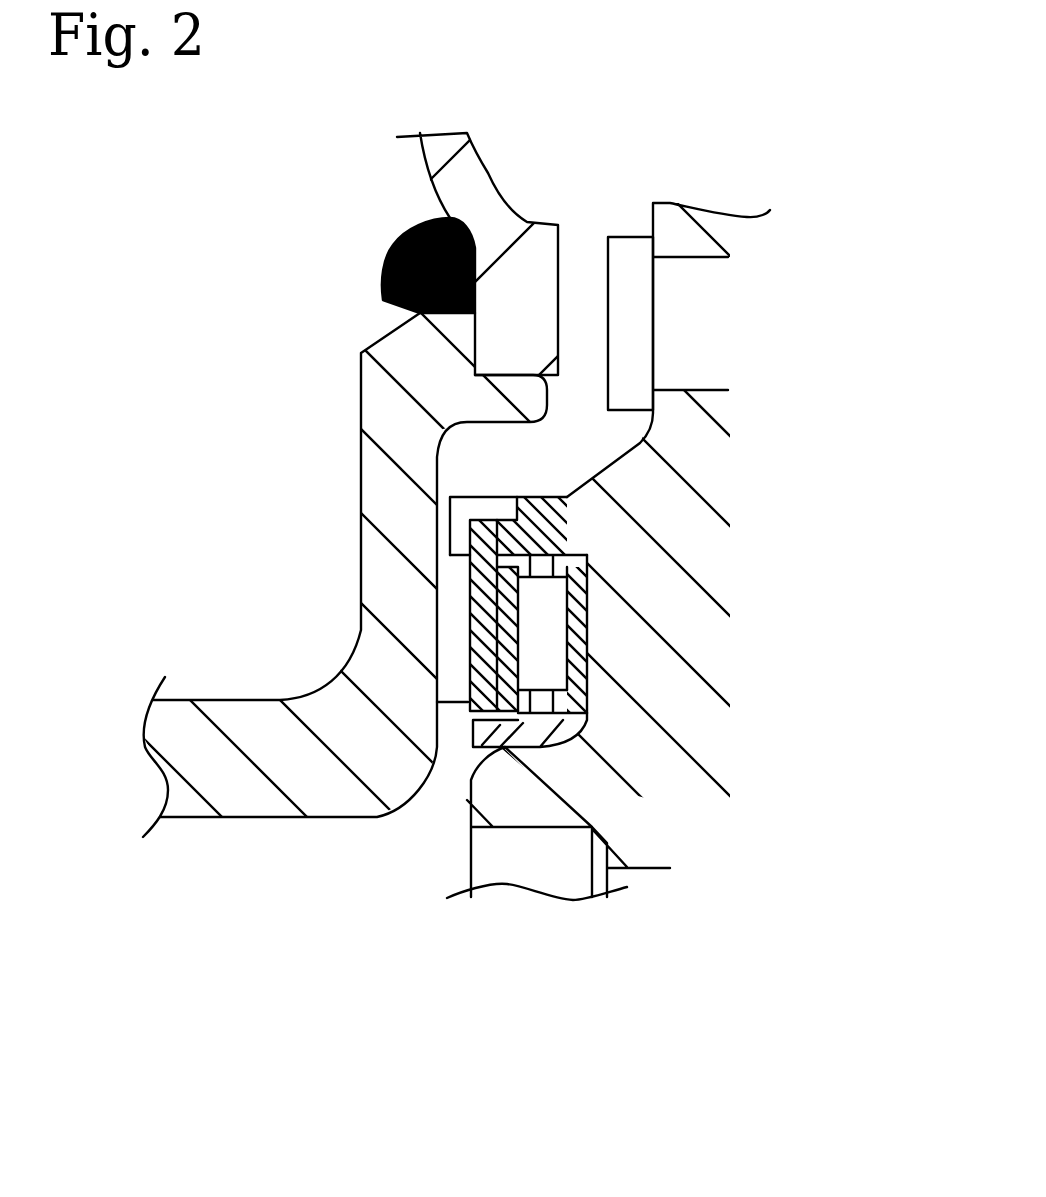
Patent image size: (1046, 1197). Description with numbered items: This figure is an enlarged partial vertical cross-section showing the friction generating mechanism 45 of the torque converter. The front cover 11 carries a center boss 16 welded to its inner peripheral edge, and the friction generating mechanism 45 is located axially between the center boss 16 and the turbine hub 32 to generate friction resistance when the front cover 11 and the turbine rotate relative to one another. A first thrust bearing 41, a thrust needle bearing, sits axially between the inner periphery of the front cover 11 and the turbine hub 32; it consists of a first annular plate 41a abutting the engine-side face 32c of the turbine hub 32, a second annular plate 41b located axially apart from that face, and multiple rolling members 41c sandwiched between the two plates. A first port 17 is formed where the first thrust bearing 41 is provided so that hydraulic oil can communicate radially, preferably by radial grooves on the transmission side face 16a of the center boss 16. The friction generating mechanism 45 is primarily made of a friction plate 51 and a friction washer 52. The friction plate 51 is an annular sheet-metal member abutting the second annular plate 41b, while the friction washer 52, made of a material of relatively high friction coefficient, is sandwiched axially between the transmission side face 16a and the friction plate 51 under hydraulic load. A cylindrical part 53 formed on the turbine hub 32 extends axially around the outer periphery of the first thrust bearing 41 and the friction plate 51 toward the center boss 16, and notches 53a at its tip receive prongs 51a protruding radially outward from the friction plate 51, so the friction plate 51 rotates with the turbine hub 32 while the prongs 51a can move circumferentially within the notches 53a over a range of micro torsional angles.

The front cover 11 is at (470, 200).
The center boss 16 is at (382, 552).
The transmission side face 16a is at (440, 720).
The first port 17 is at (432, 845).
The turbine hub 32 is at (683, 607).
The face 32c is at (585, 587).
The first thrust bearing 41 is at (565, 525).
The first annular plate 41a is at (578, 655).
The second annular plate 41b is at (500, 747).
The rolling members 41c is at (570, 692).
The friction generating mechanism 45 is at (463, 475).
The friction plate 51 is at (468, 702).
The prongs 51a is at (465, 518).
The friction washer 52 is at (450, 657).
The cylindrical part 53 is at (548, 472).
The notches 53a is at (497, 510).